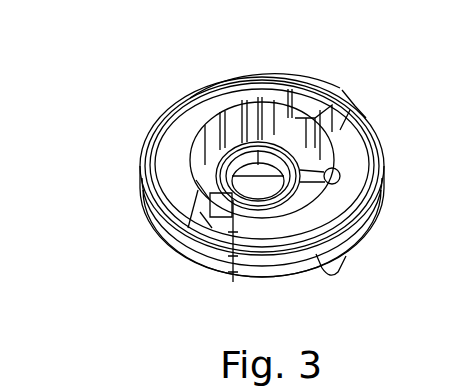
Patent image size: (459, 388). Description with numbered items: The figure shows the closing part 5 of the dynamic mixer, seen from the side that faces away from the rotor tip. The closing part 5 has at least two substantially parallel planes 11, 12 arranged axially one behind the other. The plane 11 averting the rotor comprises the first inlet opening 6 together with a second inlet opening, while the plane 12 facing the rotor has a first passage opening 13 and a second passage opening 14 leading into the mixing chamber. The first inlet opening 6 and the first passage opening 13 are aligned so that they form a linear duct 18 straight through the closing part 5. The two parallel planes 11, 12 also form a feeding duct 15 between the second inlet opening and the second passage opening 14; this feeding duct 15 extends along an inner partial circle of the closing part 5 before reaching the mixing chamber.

The closing part 5 is at (117, 163).
The first inlet opening 6 is at (316, 83).
The plane averting the rotor 11 is at (275, 78).
The plane facing the rotor 12 is at (352, 108).
The first passage opening 13 is at (233, 282).
The second passage opening 14 is at (262, 122).
The feeding duct 15 is at (216, 118).
The linear duct 18 is at (190, 232).